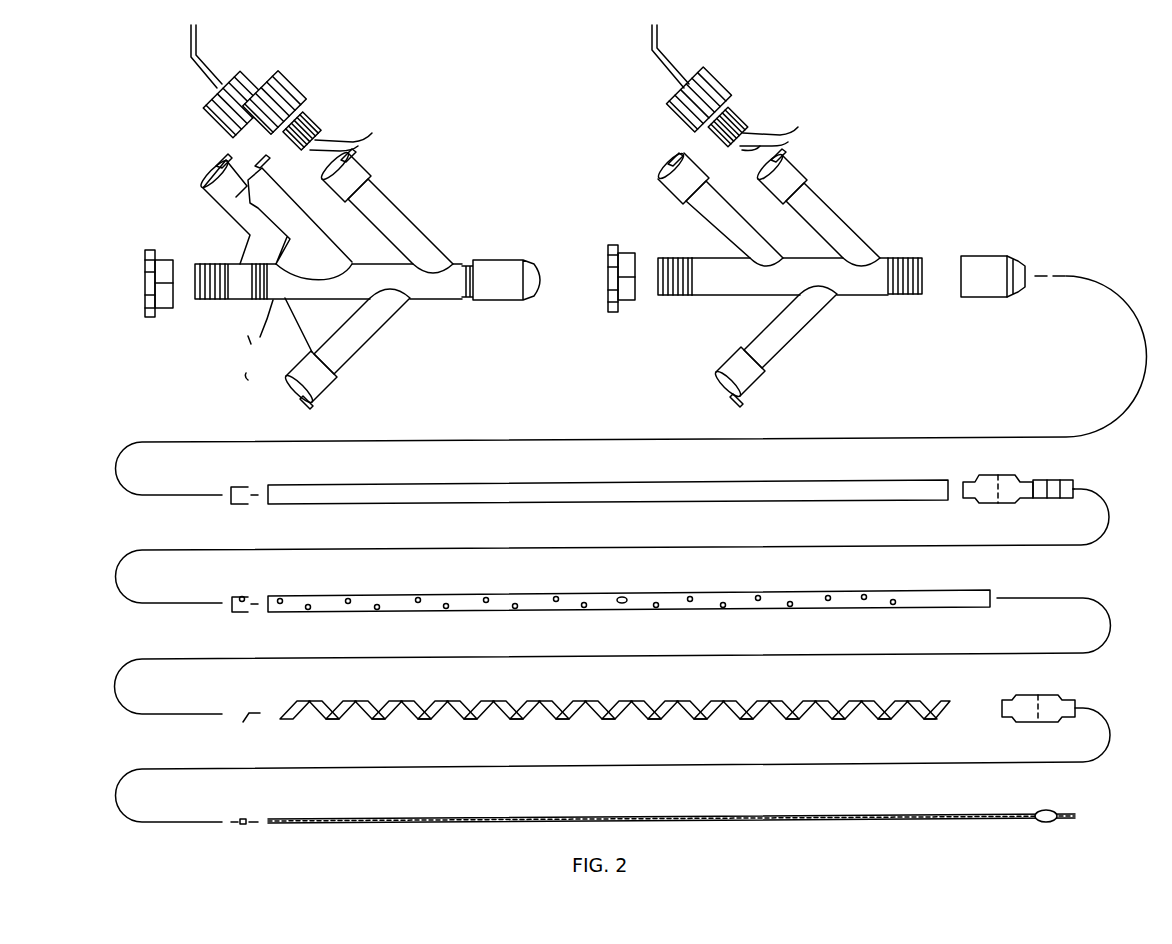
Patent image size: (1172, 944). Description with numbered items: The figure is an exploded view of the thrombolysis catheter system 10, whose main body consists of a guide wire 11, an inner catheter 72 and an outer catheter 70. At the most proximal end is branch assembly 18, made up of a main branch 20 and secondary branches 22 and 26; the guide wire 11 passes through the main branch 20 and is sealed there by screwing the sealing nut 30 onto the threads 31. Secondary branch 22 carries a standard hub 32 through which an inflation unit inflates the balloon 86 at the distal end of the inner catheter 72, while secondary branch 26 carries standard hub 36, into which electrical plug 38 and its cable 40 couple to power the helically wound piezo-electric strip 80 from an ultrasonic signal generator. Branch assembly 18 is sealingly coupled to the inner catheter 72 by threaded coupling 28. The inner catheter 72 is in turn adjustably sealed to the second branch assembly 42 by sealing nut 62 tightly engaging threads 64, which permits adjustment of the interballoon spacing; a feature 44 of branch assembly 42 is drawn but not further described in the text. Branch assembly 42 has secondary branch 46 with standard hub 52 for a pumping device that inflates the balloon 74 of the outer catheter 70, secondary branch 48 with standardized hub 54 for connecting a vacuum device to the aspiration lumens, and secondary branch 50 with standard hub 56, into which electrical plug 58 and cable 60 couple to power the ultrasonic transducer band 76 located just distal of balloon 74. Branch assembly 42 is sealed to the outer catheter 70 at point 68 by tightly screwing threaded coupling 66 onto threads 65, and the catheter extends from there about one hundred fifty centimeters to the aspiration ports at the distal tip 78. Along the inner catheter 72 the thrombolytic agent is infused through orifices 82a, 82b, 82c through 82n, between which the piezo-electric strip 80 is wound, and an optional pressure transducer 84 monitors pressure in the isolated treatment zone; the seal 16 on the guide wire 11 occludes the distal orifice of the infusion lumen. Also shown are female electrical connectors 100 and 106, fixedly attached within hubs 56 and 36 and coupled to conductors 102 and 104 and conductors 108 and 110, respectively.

The thrombolysis catheter system 10 is at (970, 154).
The guide wire 11 is at (860, 820).
The seal 16 is at (1045, 822).
The branch assembly 18 is at (450, 300).
The main branch 20 is at (240, 300).
The secondary branch 22 is at (380, 337).
The secondary branch 26 is at (423, 228).
The threaded coupling 28 is at (493, 253).
The sealing nut 30 is at (147, 317).
The threads 31 is at (207, 302).
The standard hub 32 is at (330, 390).
The standard hub 36 is at (367, 175).
The electrical plug 38 is at (293, 78).
The cable 40 is at (200, 81).
The branch assembly 42 is at (877, 297).
The proximal end 44 is at (697, 297).
The secondary branch 46 is at (793, 343).
The secondary branch 48 is at (692, 217).
The secondary branch 50 is at (850, 220).
The standard hub 52 is at (747, 388).
The standardized hub 54 is at (672, 171).
The standard hub 56 is at (797, 163).
The electrical plug 58 is at (720, 78).
The cable 60 is at (678, 77).
The sealing nut 62 is at (612, 315).
The threads 64 is at (667, 300).
The threads 65 is at (900, 258).
The threaded coupling 66 is at (980, 245).
The sealing point 68 is at (1020, 258).
The outer catheter 70 is at (620, 483).
The inner catheter 72 is at (485, 596).
The balloon 74 is at (1012, 475).
The ultrasonic transducer band 76 is at (1053, 480).
The distal tip 78 is at (1083, 483).
The piezo-electric strip 80 is at (745, 700).
The orifice 82a is at (893, 600).
The orifice 82b is at (864, 595).
The orifice 82c is at (790, 599).
The orifice 82n is at (280, 598).
The pressure transducer 84 is at (621, 597).
The balloon 86 is at (1050, 700).
The female electrical connector 100 is at (740, 108).
The conductor 102 is at (773, 133).
The conductor 104 is at (753, 153).
The female electrical connector 106 is at (313, 113).
The conductor 108 is at (348, 137).
The conductor 110 is at (327, 152).